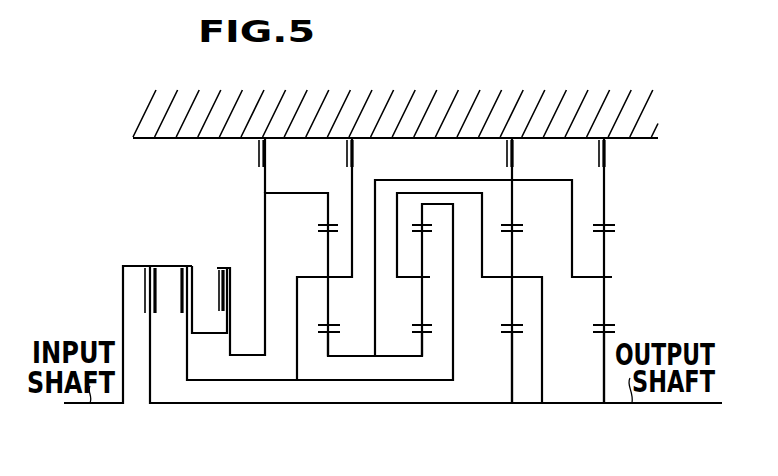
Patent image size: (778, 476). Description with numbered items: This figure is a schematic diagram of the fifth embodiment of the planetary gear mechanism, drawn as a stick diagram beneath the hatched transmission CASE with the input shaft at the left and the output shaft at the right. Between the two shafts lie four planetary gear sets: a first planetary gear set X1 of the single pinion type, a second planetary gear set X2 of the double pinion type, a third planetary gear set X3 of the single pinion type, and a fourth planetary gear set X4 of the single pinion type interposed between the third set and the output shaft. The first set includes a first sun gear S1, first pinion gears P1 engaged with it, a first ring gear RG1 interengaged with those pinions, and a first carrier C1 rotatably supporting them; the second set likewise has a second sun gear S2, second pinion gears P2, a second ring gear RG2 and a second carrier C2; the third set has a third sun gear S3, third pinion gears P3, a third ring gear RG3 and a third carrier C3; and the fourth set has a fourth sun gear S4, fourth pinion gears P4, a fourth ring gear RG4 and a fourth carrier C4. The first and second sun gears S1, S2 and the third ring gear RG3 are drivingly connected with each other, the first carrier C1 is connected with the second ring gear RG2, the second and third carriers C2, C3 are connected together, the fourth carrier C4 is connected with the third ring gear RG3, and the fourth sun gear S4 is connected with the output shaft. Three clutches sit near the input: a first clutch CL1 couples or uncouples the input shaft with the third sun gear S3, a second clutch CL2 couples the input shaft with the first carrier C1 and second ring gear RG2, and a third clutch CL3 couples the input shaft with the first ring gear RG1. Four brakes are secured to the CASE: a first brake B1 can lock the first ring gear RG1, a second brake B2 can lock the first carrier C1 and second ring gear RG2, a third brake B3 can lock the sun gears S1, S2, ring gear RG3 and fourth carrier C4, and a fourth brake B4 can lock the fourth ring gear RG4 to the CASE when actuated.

The case CASE is at (395, 114).
The first brake B1 is at (244, 158).
The second brake B2 is at (368, 158).
The third brake B3 is at (527, 158).
The fourth brake B4 is at (621, 158).
The first clutch CL1 is at (146, 272).
The second clutch CL2 is at (188, 264).
The third clutch CL3 is at (230, 271).
The first ring gear RG1 is at (327, 213).
The second ring gear RG2 is at (430, 213).
The third ring gear RG3 is at (519, 207).
The fourth ring gear RG4 is at (604, 210).
The first pinion gears P1 is at (328, 310).
The second pinion gears P2 is at (422, 311).
The third pinion gears P3 is at (512, 309).
The fourth pinion gears P4 is at (603, 309).
The first carrier C1 is at (311, 277).
The second carrier C2 is at (420, 278).
The third carrier C3 is at (522, 277).
The fourth carrier C4 is at (590, 277).
The first sun gear S1 is at (332, 345).
The second sun gear S2 is at (423, 345).
The third sun gear S3 is at (513, 348).
The fourth sun gear S4 is at (605, 348).
The first planetary gear set X1 is at (322, 342).
The second planetary gear set X2 is at (413, 342).
The third planetary gear set X3 is at (502, 342).
The fourth planetary gear set X4 is at (597, 342).